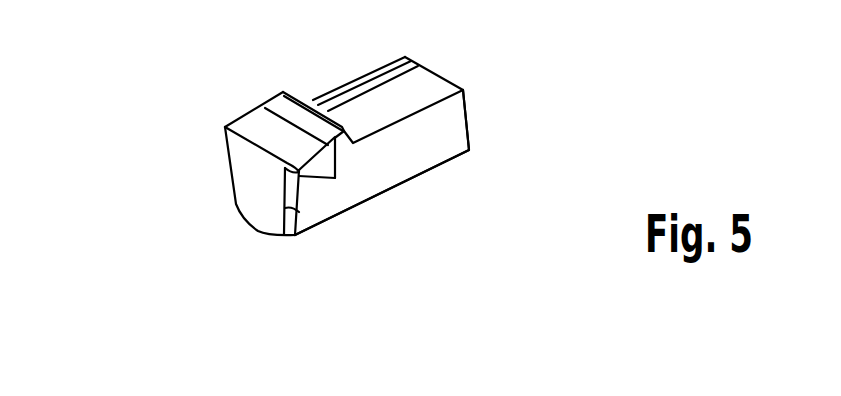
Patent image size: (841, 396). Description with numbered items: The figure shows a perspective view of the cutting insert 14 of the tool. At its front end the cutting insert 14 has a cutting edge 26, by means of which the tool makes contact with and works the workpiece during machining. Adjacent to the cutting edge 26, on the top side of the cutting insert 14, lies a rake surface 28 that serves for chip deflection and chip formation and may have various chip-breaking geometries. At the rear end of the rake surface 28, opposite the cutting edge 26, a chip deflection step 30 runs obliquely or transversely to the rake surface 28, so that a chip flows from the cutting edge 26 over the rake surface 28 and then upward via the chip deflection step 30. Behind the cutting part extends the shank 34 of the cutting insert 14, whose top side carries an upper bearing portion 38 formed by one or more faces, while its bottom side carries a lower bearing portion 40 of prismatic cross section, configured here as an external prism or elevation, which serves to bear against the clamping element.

The cutting insert 14 is at (148, 97).
The cutting edge 26 is at (253, 155).
The rake surface 28 is at (262, 118).
The chip deflection step 30 is at (295, 108).
The shank 34 is at (452, 123).
The upper bearing portion 38 is at (387, 100).
The lower bearing portion 40 is at (380, 195).